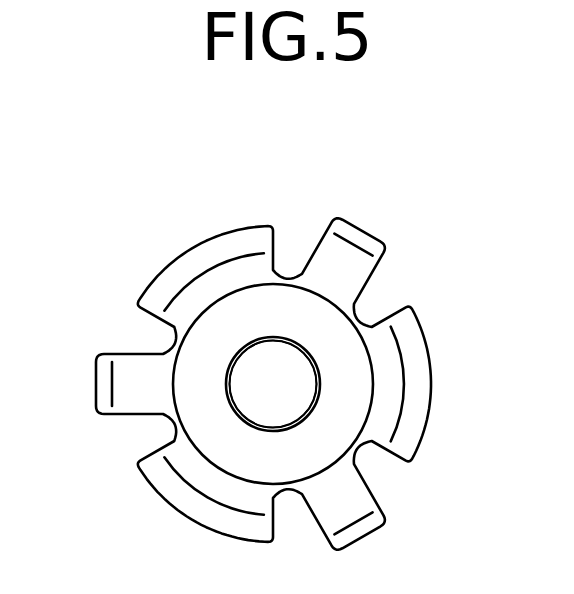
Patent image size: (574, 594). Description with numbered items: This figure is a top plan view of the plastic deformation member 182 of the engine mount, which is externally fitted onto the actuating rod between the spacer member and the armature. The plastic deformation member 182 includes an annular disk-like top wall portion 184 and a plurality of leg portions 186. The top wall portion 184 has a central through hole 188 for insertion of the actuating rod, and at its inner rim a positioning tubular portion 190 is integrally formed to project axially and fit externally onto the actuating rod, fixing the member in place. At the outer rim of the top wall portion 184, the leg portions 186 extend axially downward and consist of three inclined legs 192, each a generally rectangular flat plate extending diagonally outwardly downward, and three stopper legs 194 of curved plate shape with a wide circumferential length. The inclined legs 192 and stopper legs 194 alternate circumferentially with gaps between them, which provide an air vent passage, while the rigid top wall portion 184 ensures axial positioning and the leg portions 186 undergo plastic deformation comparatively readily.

The plastic deformation member 182 is at (430, 199).
The top wall portion 184 is at (345, 376).
The leg portions 186 is at (90, 460).
The through hole 188 is at (230, 380).
The positioning tubular portion 190 is at (303, 427).
The inclined legs 192 is at (355, 276).
The stopper legs 194 is at (213, 257).